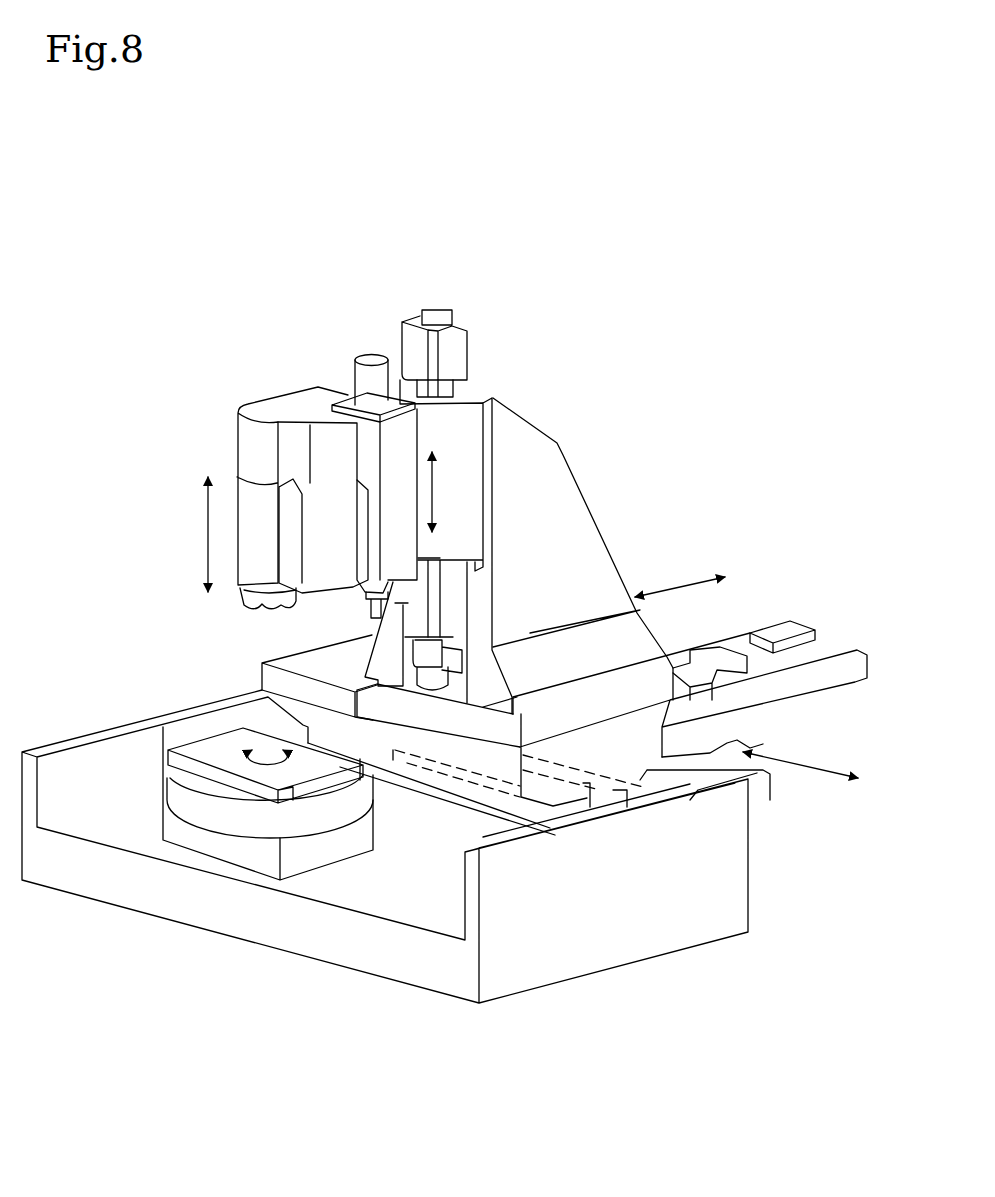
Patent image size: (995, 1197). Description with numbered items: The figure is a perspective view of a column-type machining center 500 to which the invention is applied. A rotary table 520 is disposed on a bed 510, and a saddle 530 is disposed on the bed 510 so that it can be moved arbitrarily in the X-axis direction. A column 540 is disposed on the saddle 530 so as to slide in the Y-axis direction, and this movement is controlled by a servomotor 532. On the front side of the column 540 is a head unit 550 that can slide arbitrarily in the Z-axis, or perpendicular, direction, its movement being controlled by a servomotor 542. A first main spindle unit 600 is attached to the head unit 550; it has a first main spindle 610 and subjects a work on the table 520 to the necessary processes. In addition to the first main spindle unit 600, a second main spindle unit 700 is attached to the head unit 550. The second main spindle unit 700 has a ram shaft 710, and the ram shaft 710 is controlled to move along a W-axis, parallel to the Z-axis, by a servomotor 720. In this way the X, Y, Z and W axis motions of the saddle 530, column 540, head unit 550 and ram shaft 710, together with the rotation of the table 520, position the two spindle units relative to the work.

The machining center 500 is at (633, 383).
The bed 510 is at (612, 952).
The rotary table 520 is at (190, 745).
The saddle 530 is at (827, 678).
The servomotor 532 is at (780, 627).
The column 540 is at (583, 543).
The servomotor 542 is at (458, 345).
The head unit 550 is at (466, 416).
The first main spindle unit 600 is at (257, 440).
The first main spindle 610 is at (260, 593).
The second main spindle unit 700 is at (398, 443).
The ram shaft 710 is at (370, 607).
The servomotor 720 is at (363, 383).